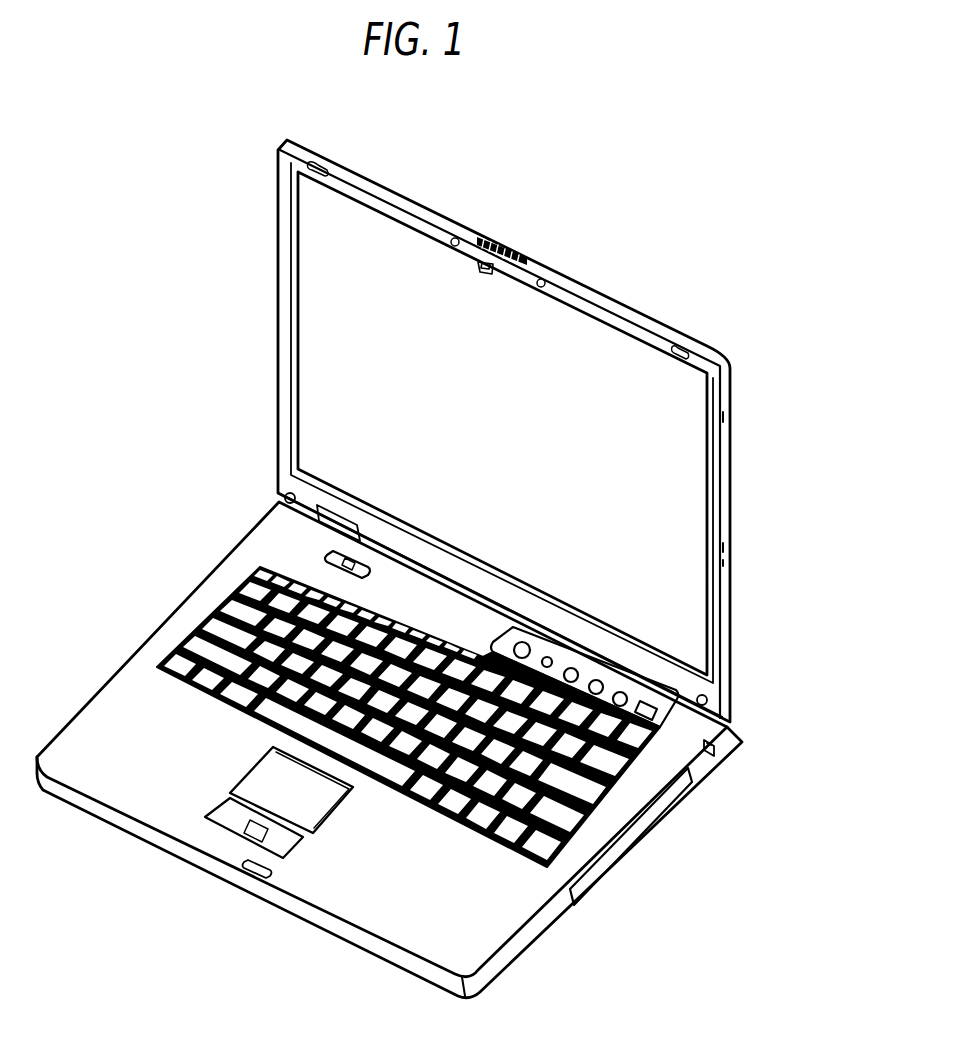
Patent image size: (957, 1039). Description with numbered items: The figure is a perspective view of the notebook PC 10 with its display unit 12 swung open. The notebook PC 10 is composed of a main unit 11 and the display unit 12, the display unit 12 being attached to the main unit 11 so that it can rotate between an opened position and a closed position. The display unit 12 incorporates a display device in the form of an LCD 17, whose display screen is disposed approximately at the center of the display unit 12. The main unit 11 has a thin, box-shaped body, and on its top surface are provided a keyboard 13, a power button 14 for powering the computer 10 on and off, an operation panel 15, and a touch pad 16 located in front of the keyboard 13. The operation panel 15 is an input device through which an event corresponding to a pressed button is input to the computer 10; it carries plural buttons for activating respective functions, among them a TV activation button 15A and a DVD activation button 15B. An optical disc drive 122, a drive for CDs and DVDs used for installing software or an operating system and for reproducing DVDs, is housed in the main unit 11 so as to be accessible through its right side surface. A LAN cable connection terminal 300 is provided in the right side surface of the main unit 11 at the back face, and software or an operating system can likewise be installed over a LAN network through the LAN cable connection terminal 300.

The notebook PC 10 is at (724, 884).
The main unit 11 is at (530, 940).
The display unit 12 is at (722, 568).
The keyboard 13 is at (538, 813).
The power button 14 is at (340, 553).
The operation panel 15 is at (610, 656).
The TV activation button 15A is at (522, 643).
The DVD activation button 15B is at (552, 658).
The touch pad 16 is at (262, 791).
The LCD 17 is at (684, 445).
The optical disc drive 122 is at (654, 815).
The LAN cable connection terminal 300 is at (720, 750).